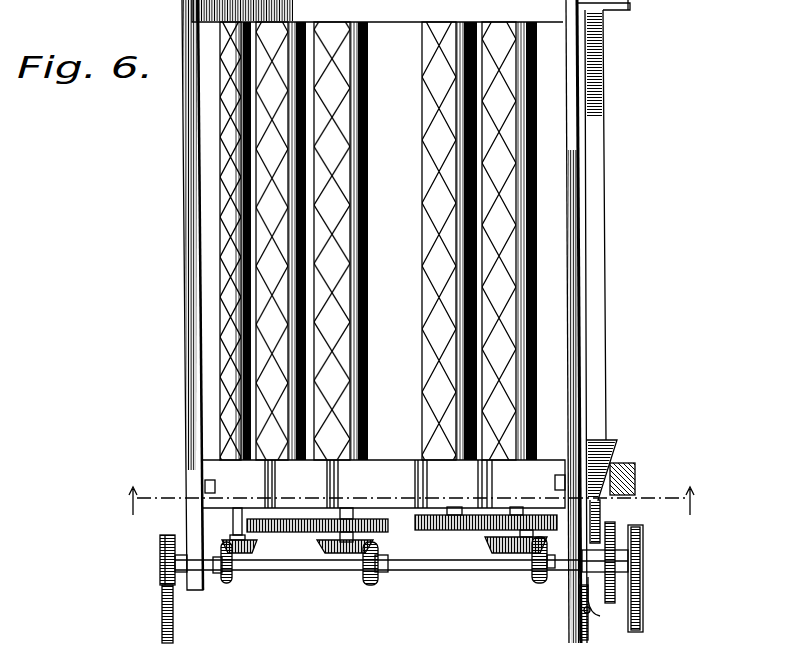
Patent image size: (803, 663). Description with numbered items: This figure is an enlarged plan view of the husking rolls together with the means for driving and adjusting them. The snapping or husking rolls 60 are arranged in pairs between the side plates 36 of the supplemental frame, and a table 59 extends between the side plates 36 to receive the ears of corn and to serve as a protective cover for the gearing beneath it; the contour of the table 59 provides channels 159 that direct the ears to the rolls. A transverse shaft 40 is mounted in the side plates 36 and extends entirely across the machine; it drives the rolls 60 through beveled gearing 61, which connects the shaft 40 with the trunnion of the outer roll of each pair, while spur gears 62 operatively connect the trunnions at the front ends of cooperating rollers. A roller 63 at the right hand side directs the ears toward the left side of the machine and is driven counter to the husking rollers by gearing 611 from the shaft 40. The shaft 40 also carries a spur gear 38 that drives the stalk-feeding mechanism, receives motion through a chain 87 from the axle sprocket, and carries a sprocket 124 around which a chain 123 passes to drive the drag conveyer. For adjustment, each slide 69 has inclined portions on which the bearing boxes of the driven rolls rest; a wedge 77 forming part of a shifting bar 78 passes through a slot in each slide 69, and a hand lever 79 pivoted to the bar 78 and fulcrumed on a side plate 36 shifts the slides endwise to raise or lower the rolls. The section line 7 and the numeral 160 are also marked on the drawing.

The side plates 36 is at (190, 227).
The roller 63 is at (237, 315).
The snapping rolls 60 is at (430, 358).
The table 59 is at (383, 484).
The spur gears 62 is at (320, 512).
The beveled gearing 61 is at (358, 568).
The gearing 611 is at (228, 583).
The transverse shaft 40 is at (303, 568).
The sprocket 124 is at (160, 550).
The chain 123 is at (162, 628).
The shifting bar 78 is at (604, 320).
The wedge 77 is at (613, 441).
The slide 69 is at (635, 462).
The spur gear 38 is at (610, 520).
The chain 87 is at (643, 621).
The hand lever 79 is at (589, 620).
The section line 7 is at (409, 499).
The element 160 is at (290, 656).
The channels 159 is at (465, 656).